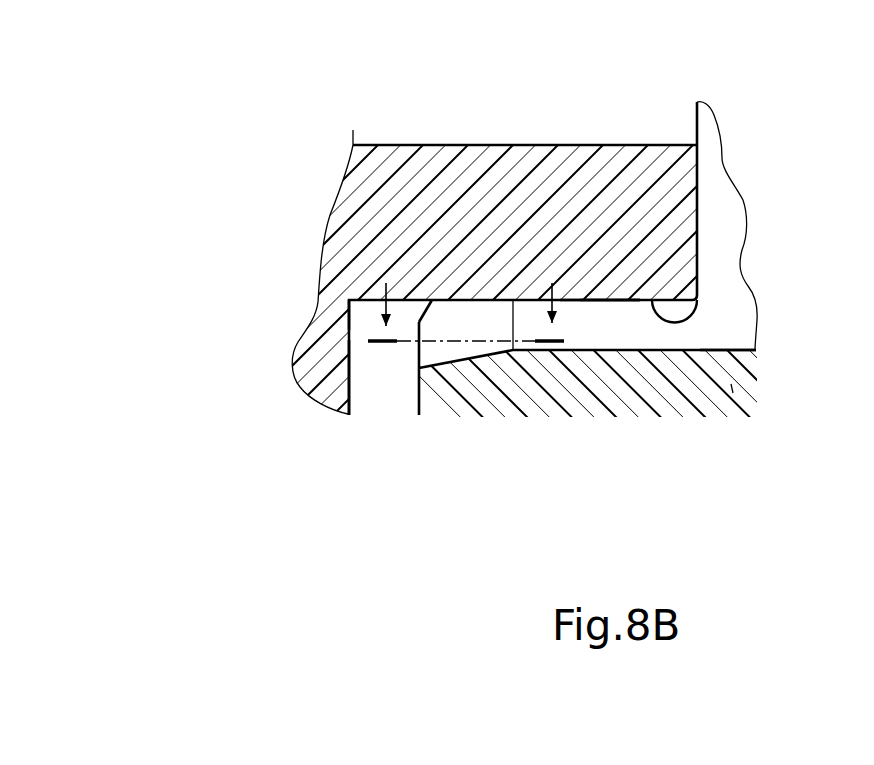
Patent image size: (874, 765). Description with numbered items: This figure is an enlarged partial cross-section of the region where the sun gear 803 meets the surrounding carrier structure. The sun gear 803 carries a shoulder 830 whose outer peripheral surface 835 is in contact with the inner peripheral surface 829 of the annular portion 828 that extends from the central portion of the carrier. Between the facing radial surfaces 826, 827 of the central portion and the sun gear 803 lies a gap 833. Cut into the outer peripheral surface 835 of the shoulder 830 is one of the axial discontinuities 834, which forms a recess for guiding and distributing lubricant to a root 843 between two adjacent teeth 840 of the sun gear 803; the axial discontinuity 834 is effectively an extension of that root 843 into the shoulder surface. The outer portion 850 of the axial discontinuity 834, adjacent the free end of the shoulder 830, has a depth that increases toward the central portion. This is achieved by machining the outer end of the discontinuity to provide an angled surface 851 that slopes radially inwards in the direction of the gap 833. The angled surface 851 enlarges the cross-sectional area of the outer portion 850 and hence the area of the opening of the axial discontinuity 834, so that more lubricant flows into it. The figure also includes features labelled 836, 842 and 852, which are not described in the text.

The sun gear 803 is at (732, 390).
The radial surface of the central portion 826 is at (347, 413).
The radial surface of the sun gear 827 is at (418, 389).
The annular portion 828 is at (403, 178).
The inner peripheral surface 829 is at (607, 312).
The shoulder 830 is at (598, 285).
The gap 833 is at (374, 373).
The axial discontinuity 834 is at (625, 332).
The outer peripheral surface 835 is at (532, 300).
The chamber 836 is at (584, 333).
The teeth 840 is at (711, 153).
The semicircular protrusion 842 is at (677, 320).
The root 843 is at (722, 350).
The outer portion of the axial discontinuity 850 is at (460, 311).
The angled surface 851 is at (440, 365).
The upper contact line 852 is at (453, 333).